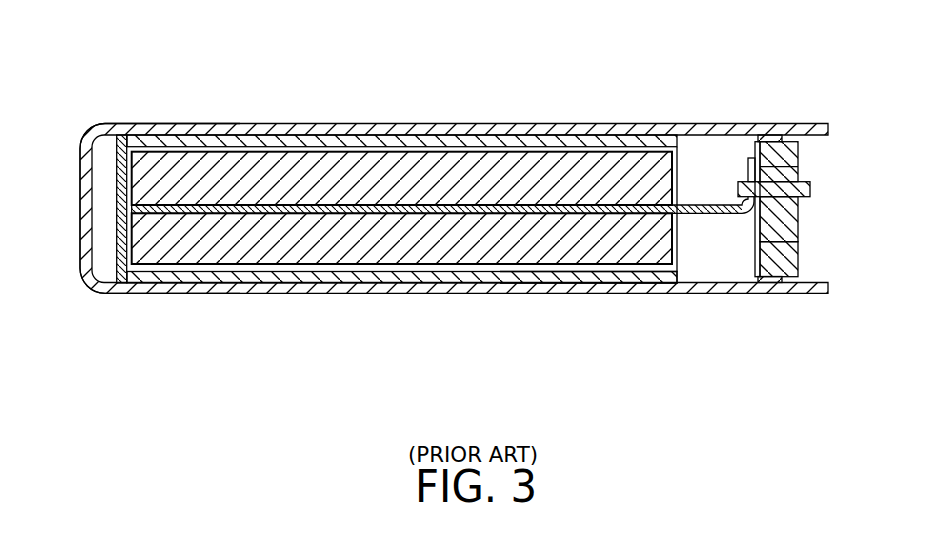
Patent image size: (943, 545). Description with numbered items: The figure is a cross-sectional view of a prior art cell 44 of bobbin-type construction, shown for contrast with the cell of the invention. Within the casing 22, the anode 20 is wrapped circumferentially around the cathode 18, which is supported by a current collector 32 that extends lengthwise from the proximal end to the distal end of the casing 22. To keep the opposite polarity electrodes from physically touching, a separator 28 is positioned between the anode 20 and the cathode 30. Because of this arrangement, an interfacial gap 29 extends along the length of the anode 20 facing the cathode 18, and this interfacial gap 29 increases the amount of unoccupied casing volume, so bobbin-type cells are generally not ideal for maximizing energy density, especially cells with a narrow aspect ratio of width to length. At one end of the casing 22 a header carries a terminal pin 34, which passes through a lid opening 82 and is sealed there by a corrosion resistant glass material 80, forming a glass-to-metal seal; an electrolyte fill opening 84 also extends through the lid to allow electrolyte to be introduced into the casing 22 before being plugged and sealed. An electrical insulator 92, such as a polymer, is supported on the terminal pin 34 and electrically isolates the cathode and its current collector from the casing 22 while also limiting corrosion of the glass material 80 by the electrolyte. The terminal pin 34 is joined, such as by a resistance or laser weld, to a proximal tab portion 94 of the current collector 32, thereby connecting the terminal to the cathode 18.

The cathode 18 is at (292, 256).
The anode 20 is at (354, 128).
The casing 22 is at (215, 128).
The separator 28 is at (276, 134).
The interfacial gap 29 is at (583, 275).
The cathode 30 is at (452, 162).
The current collector 32 is at (555, 200).
The terminal pin 34 is at (805, 189).
The prior art cell 44 is at (680, 60).
The glass material 80 is at (797, 168).
The lid opening 82 is at (797, 210).
The electrolyte fill opening 84 is at (797, 250).
The electrical insulator 92 is at (770, 137).
The proximal tab portion 94 is at (755, 143).